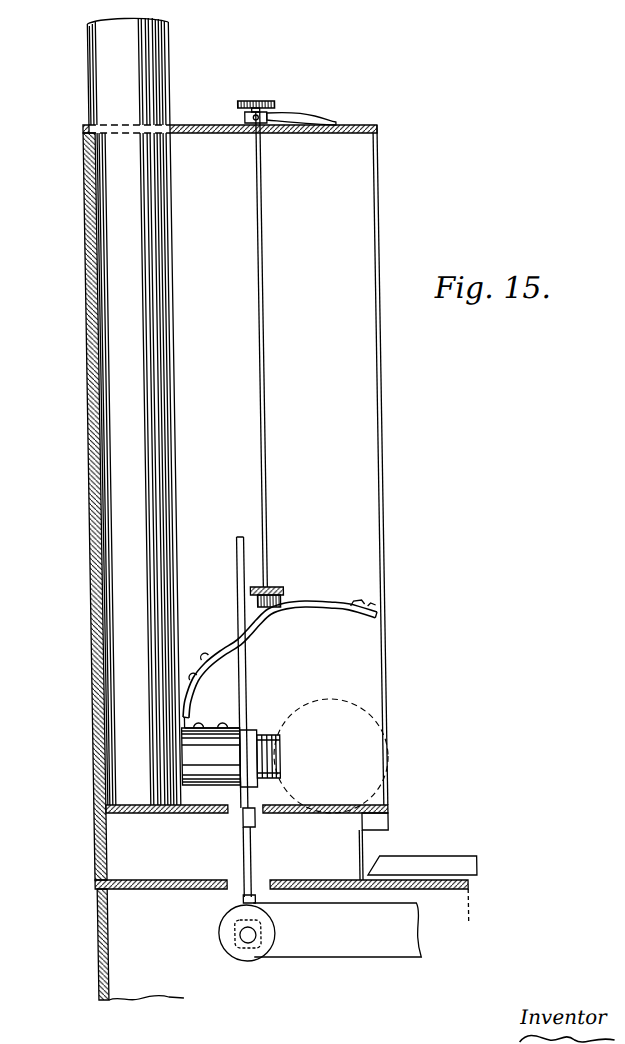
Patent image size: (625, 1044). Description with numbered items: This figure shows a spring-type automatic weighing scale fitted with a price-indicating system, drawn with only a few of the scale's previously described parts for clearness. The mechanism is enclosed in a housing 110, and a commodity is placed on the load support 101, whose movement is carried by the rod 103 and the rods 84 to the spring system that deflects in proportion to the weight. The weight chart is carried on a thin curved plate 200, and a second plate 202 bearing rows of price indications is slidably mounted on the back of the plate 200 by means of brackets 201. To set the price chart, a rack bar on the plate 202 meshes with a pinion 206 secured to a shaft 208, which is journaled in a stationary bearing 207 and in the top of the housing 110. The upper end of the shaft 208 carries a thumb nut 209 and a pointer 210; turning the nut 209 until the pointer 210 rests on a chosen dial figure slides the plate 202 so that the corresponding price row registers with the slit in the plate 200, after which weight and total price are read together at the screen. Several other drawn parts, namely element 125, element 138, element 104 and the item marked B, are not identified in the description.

The housing 110 is at (318, 134).
The cylinder 125 is at (102, 328).
The shaft 208 is at (257, 460).
The thumb nut 209 is at (275, 102).
The pointer 210 is at (292, 115).
The stationary bearing 207 is at (265, 587).
The pinion 206 is at (254, 602).
The plate 200 is at (280, 664).
The plate 202 is at (314, 616).
The brackets 201 is at (350, 602).
The rods 84 is at (230, 605).
The direction B is at (248, 637).
The motor 138 is at (200, 773).
The rod 103 is at (241, 861).
The pivot 104 is at (238, 962).
The load support 101 is at (416, 860).